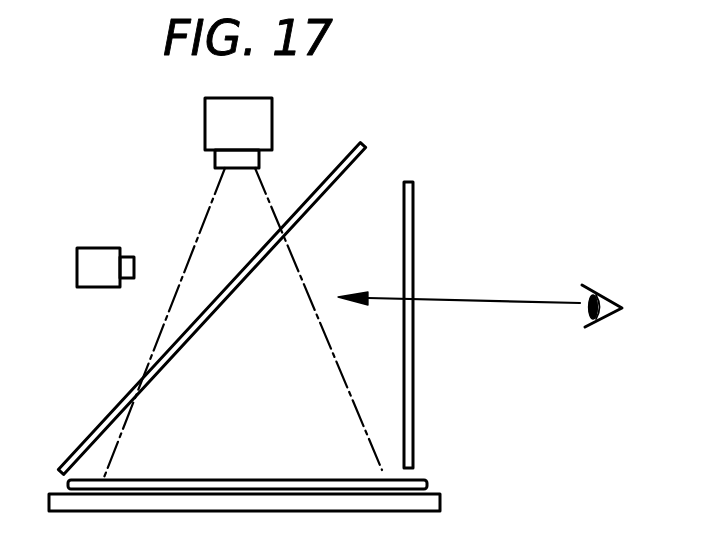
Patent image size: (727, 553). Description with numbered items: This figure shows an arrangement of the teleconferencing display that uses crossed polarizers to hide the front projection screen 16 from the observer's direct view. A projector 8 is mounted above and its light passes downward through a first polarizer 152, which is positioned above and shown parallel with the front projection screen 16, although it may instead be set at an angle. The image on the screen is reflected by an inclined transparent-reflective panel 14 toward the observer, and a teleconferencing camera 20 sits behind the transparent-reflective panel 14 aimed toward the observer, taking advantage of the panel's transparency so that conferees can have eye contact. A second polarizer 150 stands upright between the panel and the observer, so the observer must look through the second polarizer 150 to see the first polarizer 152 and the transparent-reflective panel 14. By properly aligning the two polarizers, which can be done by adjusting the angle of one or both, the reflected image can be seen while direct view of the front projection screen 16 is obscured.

The projector 8 is at (220, 126).
The teleconferencing camera 20 is at (104, 252).
The transparent-reflective panel 14 is at (92, 432).
The second polarizer 150 is at (414, 353).
The first polarizer 152 is at (427, 482).
The front projection screen 16 is at (443, 500).